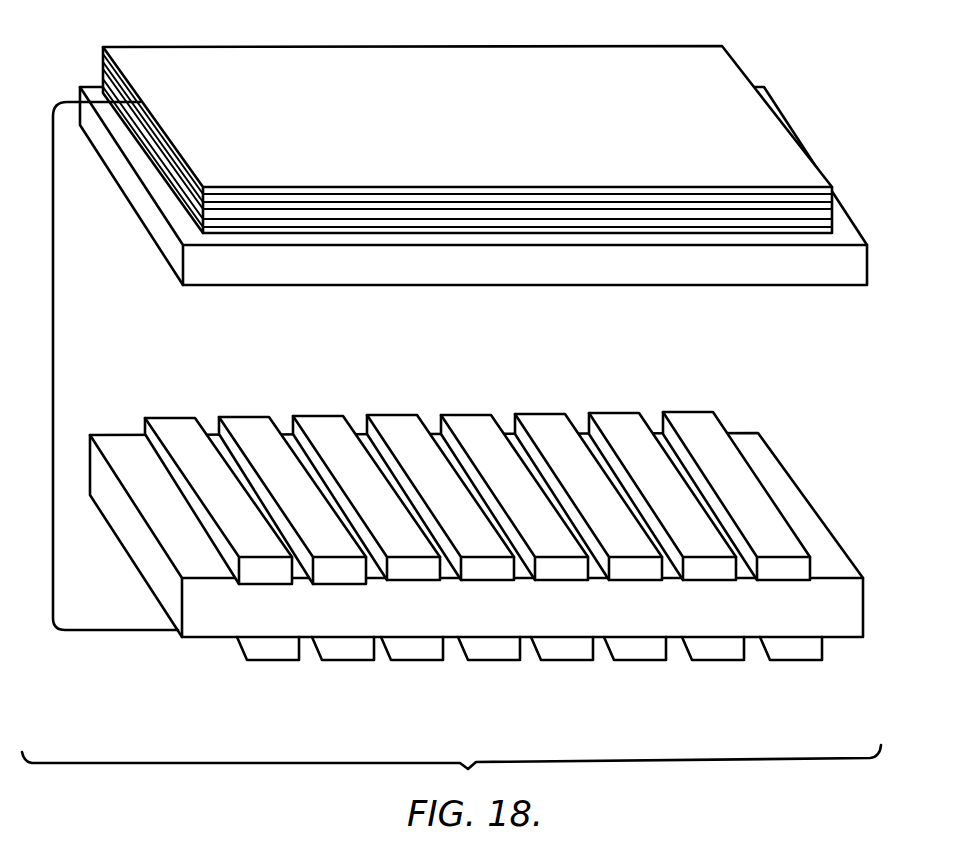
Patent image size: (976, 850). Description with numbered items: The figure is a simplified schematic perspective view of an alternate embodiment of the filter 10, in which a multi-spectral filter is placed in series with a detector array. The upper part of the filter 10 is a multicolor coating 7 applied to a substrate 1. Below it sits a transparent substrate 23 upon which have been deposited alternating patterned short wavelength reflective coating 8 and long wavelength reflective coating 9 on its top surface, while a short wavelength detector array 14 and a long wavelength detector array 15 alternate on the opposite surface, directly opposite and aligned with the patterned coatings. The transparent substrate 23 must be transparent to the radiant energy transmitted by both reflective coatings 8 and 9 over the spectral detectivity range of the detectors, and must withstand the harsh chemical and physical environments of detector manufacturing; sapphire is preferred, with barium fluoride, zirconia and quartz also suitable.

The substrate 1 is at (155, 245).
The multicolor coating 7 is at (724, 48).
The filter 10 is at (53, 370).
The transparent substrate 23 is at (795, 483).
The short wavelength reflective coating 8 is at (242, 415).
The long wavelength reflective coating 9 is at (168, 416).
The short wavelength detector array 14 is at (277, 661).
The long wavelength detector array 15 is at (352, 661).